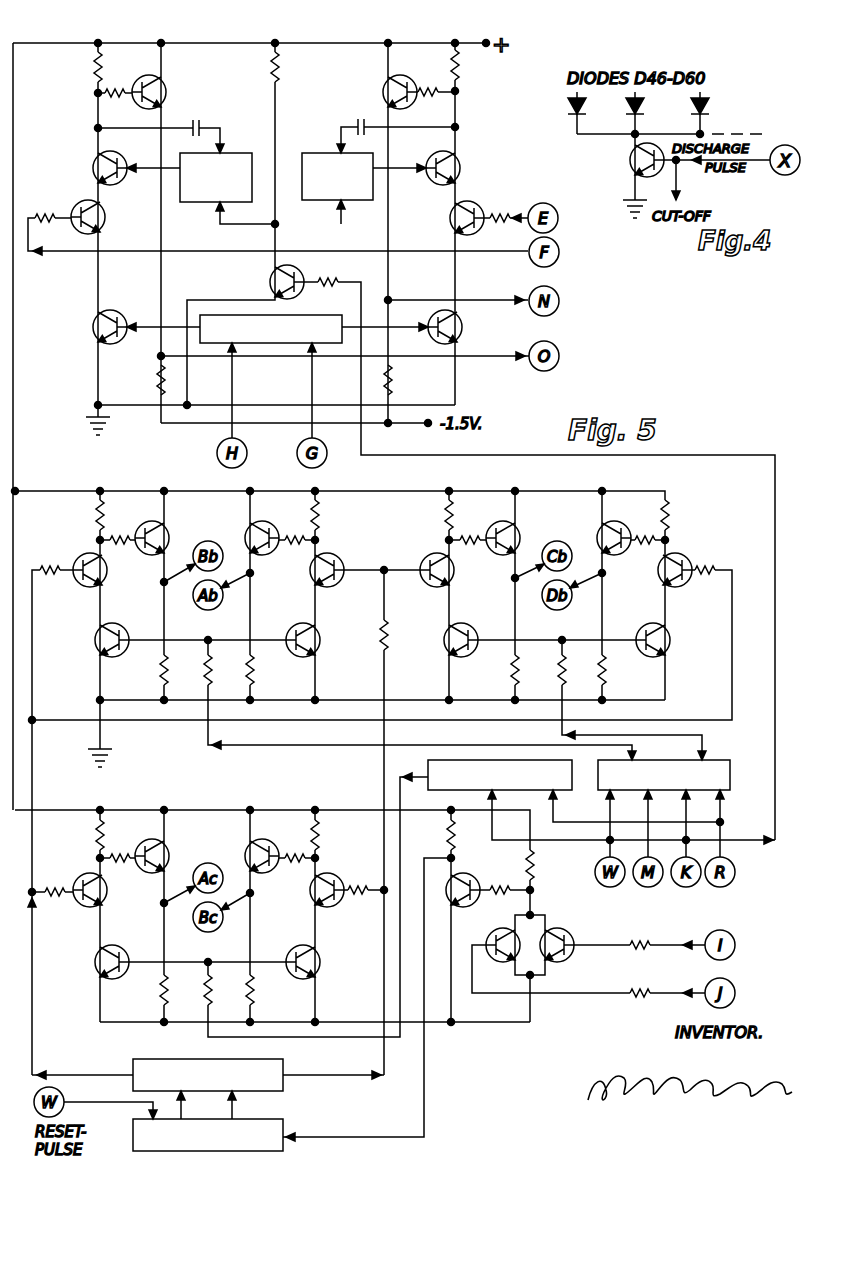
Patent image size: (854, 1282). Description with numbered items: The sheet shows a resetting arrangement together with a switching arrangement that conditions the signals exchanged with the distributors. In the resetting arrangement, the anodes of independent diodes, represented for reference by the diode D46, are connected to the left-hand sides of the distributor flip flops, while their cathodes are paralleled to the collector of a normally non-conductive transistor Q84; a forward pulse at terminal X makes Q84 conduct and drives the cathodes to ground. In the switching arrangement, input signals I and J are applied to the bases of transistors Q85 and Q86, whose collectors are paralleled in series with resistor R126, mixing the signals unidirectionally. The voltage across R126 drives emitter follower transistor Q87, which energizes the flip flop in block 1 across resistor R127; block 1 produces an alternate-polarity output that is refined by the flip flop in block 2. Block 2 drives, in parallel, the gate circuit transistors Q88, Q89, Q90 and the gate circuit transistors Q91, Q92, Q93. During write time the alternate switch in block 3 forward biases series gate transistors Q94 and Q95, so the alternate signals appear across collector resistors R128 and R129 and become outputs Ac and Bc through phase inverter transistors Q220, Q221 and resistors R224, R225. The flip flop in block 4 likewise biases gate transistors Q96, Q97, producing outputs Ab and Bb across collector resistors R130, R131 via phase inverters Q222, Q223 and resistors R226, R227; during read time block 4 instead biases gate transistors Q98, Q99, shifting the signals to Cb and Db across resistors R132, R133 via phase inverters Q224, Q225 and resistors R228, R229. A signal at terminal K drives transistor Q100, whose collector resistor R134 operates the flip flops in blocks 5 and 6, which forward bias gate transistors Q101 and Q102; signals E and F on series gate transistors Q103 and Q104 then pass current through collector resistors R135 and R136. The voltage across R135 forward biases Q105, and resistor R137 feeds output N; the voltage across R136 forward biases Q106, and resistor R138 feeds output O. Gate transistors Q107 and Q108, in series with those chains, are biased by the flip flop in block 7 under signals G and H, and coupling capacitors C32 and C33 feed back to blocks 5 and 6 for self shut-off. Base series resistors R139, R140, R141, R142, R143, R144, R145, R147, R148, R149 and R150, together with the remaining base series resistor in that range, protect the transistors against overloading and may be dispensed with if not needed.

In FIG. 4, the diode D46 is at (638, 113).
In FIG. 4, the normally non-conductive transistor Q84 is at (627, 160).
In FIG. 5, the collector circuit resistor R136 is at (76, 67).
In FIG. 5, the collector circuit resistor R134 is at (299, 68).
In FIG. 5, the collector circuit resistor R135 is at (478, 65).
In FIG. 5, the base series resistor R149 is at (122, 105).
In FIG. 5, the base series resistor R150 is at (437, 103).
In FIG. 5, the transistor Q106 is at (175, 92).
In FIG. 5, the transistor Q105 is at (381, 92).
In FIG. 5, the coupling capacitor C32 is at (164, 130).
In FIG. 5, the coupling capacitor C33 is at (386, 129).
In FIG. 5, the flip flop block 5 is at (216, 190).
In FIG. 5, the flip flop block 6 is at (337, 190).
In FIG. 5, the alternately operated flip flop block 7 is at (271, 317).
In FIG. 5, the alternate switch block 3 is at (508, 788).
In FIG. 5, the alternately operated flip flop block 4 is at (676, 788).
In FIG. 5, the alternately operated flip flop block 2 is at (224, 1080).
In FIG. 5, the flip flop block 1 is at (221, 1126).
In FIG. 5, the gate transistor Q101 is at (86, 168).
In FIG. 5, the gate transistor Q102 is at (466, 167).
In FIG. 5, the series connected gate transistor Q103 is at (446, 218).
In FIG. 5, the series connected gate transistor Q104 is at (112, 217).
In FIG. 5, the transistor Q100 is at (261, 277).
In FIG. 5, the gate transistor Q107 is at (468, 327).
In FIG. 5, the gate transistor Q108 is at (87, 327).
In FIG. 5, the base series resistor R147 is at (48, 207).
In FIG. 5, the base series resistor R148 is at (504, 204).
In FIG. 5, the resistor R138 is at (142, 380).
In FIG. 5, the resistor R137 is at (413, 380).
In FIG. 5, the collector circuit resistor R130 is at (78, 515).
In FIG. 5, the collector circuit resistor R131 is at (338, 515).
In FIG. 5, the resistor R132 is at (428, 515).
In FIG. 5, the resistor R133 is at (690, 515).
In FIG. 5, the resistor R226 is at (138, 673).
In FIG. 5, the base series resistor R141 is at (228, 672).
In FIG. 5, the resistor R227 is at (272, 673).
In FIG. 5, the resistor R228 is at (493, 675).
In FIG. 5, the base series resistor R142 is at (581, 672).
In FIG. 5, the resistor R229 is at (622, 672).
In FIG. 5, the base series resistor R144 is at (405, 627).
In FIG. 5, the base series resistor R143 is at (49, 558).
In FIG. 5, the base series resistor R145 is at (714, 581).
In FIG. 5, the phase inverter transistor Q222 is at (172, 529).
In FIG. 5, the phase inverter transistor Q223 is at (268, 528).
In FIG. 5, the phase inverter transistor Q224 is at (523, 530).
In FIG. 5, the phase inverter transistor Q225 is at (620, 528).
In FIG. 5, the gate circuit transistor Q89 is at (81, 578).
In FIG. 5, the gate circuit transistor Q90 is at (689, 564).
In FIG. 5, the gate circuit transistor Q92 is at (341, 566).
In FIG. 5, the gate circuit transistor Q93 is at (423, 566).
In FIG. 5, the series connected gate transistor Q96 is at (92, 640).
In FIG. 5, the series connected gate transistor Q97 is at (319, 647).
In FIG. 5, the gate transistor Q98 is at (448, 647).
In FIG. 5, the gate transistor Q99 is at (672, 640).
In FIG. 5, the collector resistor R128 is at (78, 835).
In FIG. 5, the collector resistor R129 is at (339, 835).
In FIG. 5, the resistor R127 is at (427, 835).
In FIG. 5, the resistor R126 is at (552, 857).
In FIG. 5, the resistor R224 is at (145, 992).
In FIG. 5, the resistor R225 is at (271, 992).
In FIG. 5, the base series resistor R139 is at (57, 879).
In FIG. 5, the base series resistor R140 is at (364, 878).
In FIG. 5, the phase inverter transistor Q220 is at (172, 847).
In FIG. 5, the phase inverter transistor Q221 is at (271, 860).
In FIG. 5, the gate circuit transistor Q88 is at (81, 898).
In FIG. 5, the series connected gate transistor Q94 is at (93, 962).
In FIG. 5, the gate circuit transistor Q91 is at (335, 898).
In FIG. 5, the series connected gate transistor Q95 is at (323, 962).
In FIG. 5, the emitter follower transistor Q87 is at (473, 879).
In FIG. 5, the transistor Q85 is at (487, 938).
In FIG. 5, the transistor Q86 is at (569, 934).